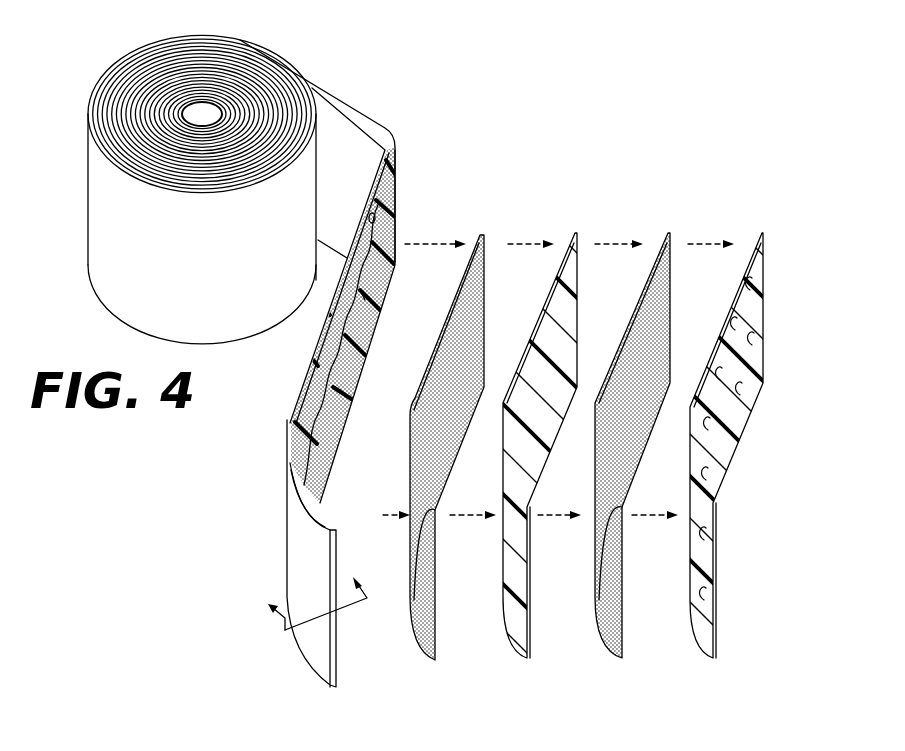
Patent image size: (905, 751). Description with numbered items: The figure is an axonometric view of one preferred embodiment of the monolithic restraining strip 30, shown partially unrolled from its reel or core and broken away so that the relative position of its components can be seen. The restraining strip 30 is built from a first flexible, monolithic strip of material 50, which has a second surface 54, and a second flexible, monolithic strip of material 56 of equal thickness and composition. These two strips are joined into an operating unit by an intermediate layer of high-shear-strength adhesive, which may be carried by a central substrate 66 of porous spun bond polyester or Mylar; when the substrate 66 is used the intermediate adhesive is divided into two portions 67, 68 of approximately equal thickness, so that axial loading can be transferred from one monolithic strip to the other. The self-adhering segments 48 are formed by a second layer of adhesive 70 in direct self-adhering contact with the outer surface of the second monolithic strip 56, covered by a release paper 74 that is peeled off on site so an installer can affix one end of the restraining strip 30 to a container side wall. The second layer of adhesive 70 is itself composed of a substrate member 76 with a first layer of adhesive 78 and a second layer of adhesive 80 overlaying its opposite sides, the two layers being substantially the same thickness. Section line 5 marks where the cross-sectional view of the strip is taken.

The restraining strip 30 is at (435, 106).
The self-adhering segments 48 is at (707, 168).
The first flexible, monolithic strip of material 50 is at (340, 148).
The second surface 54 is at (312, 483).
The second flexible, monolithic strip of material 56 is at (398, 188).
The central substrate 66 is at (355, 400).
The adhesive portion 67 is at (327, 342).
The adhesive portion 68 is at (373, 213).
The second layer of adhesive 70 is at (533, 232).
The release paper 74 is at (733, 425).
The substrate member 76 is at (543, 427).
The first layer of adhesive 78 is at (473, 342).
The second layer of adhesive 80 is at (658, 328).
The section line 5- 5 is at (311, 589).